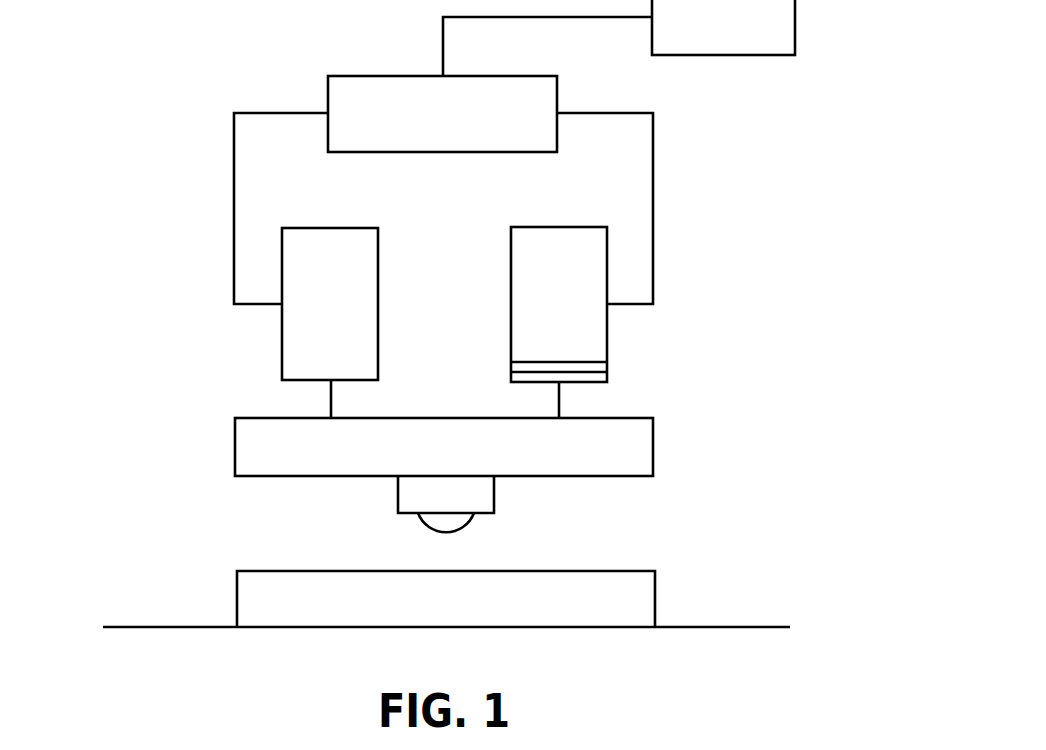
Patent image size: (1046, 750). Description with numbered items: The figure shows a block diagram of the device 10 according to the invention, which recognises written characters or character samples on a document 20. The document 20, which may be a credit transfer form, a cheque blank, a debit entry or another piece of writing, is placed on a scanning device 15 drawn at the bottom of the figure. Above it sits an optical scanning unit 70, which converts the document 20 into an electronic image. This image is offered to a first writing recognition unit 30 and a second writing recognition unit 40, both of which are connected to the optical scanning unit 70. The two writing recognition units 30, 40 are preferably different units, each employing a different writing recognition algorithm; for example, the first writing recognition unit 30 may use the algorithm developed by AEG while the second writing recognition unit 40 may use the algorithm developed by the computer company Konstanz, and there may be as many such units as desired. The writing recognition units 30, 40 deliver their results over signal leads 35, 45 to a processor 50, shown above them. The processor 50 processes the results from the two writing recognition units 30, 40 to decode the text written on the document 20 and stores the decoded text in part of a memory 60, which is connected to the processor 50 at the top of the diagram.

The device 10 is at (856, 589).
The scanning device 15 is at (122, 627).
The document 20 is at (637, 571).
The first writing recognition unit 30 is at (317, 317).
The signal lead 35 is at (234, 205).
The second writing recognition unit 40 is at (546, 317).
The signal lead 45 is at (653, 207).
The processor 50 is at (429, 127).
The memory 60 is at (711, 31).
The optical scanning unit 70 is at (432, 458).